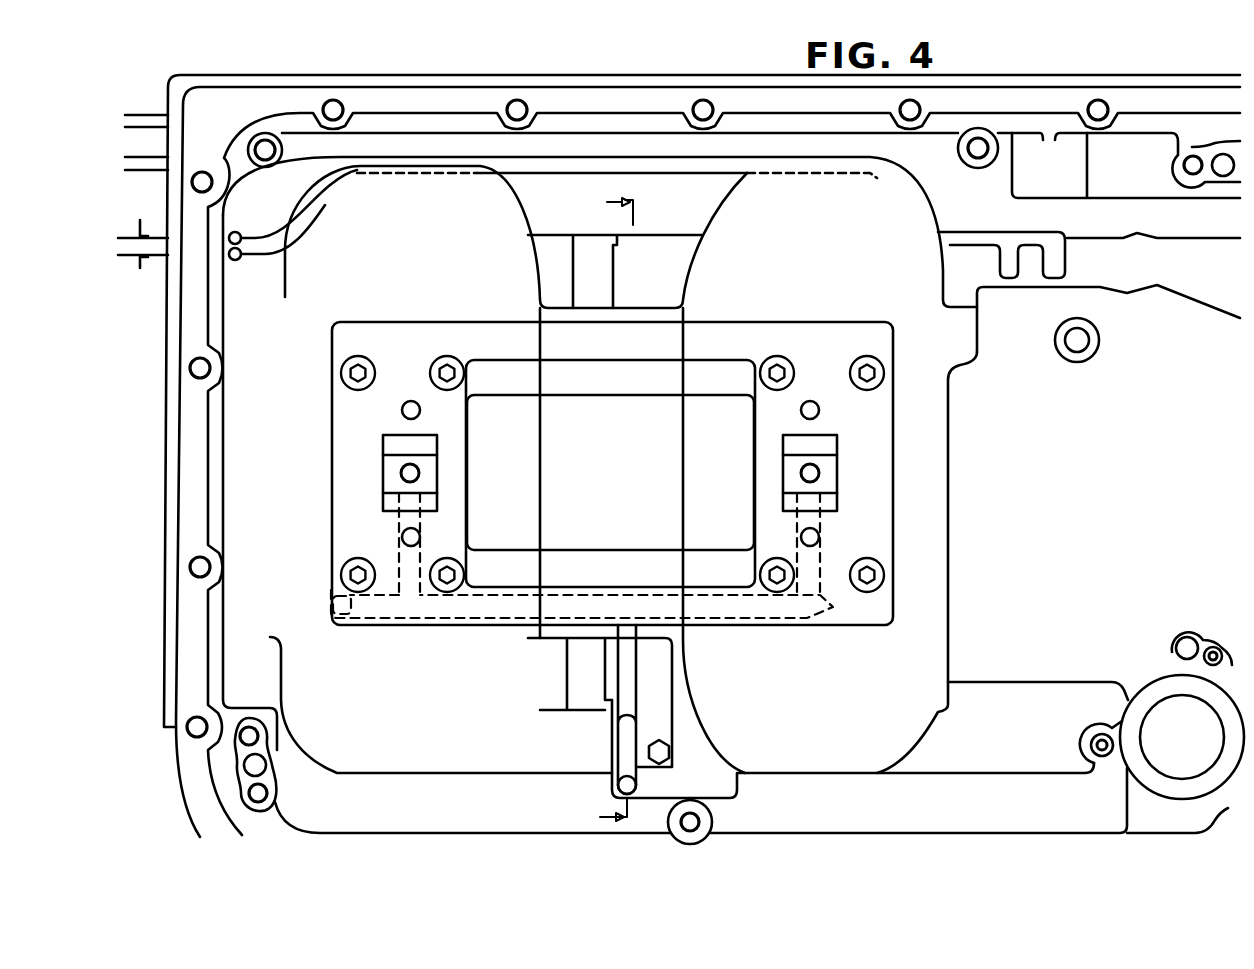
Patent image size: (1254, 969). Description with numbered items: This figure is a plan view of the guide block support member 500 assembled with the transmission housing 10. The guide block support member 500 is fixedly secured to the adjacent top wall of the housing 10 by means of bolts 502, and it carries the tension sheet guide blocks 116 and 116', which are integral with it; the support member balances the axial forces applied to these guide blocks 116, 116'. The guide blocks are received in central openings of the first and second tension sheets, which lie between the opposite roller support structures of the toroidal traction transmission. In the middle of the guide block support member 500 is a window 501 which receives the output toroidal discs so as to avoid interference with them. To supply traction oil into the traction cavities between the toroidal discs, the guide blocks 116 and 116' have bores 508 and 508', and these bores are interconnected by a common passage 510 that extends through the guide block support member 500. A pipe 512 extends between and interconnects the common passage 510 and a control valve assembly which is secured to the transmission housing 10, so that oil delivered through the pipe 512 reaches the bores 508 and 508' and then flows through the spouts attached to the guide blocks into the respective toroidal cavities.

The housing 10 is at (222, 332).
The tension sheet guide block 116 is at (352, 473).
The tension sheet guide block 116' is at (899, 473).
The guide block support member 500 is at (798, 322).
The window 501 is at (467, 507).
The bolts 502 is at (360, 356).
The bore 508 is at (467, 467).
The bore 508' is at (747, 474).
The common passage 510 is at (503, 620).
The pipe 512 is at (634, 652).